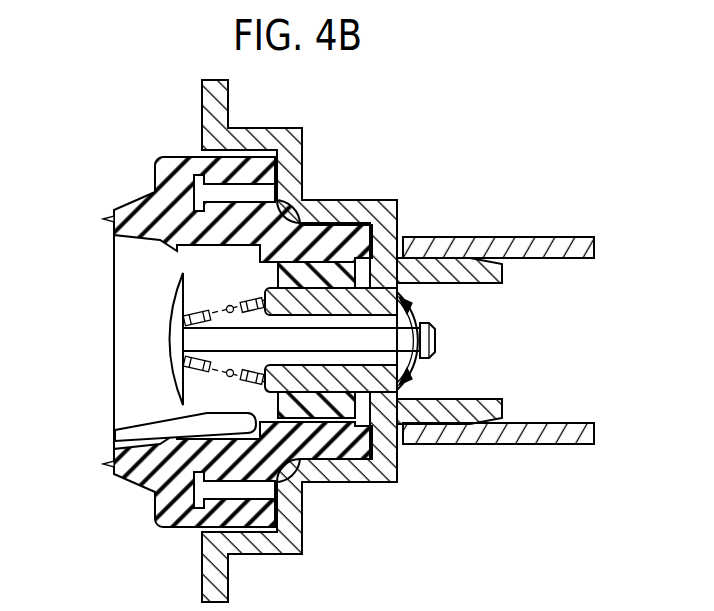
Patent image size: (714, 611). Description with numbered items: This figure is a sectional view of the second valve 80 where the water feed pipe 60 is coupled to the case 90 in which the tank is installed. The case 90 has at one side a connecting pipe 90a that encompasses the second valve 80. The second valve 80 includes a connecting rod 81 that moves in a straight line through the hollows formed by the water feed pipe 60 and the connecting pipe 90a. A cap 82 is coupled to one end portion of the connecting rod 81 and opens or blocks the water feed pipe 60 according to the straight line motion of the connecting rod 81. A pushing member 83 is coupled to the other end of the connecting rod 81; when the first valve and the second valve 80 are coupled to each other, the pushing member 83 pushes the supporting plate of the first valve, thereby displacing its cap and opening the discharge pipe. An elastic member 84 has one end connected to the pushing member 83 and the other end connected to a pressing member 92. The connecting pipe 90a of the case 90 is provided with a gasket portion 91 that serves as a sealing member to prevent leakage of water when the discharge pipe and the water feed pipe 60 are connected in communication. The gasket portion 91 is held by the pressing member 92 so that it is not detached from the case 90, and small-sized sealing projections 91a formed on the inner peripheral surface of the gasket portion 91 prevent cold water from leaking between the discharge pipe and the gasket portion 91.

The water feed pipe 60 is at (574, 432).
The second valve 80 is at (158, 378).
The connecting rod 81 is at (196, 343).
The cap 82 is at (424, 323).
The pushing member 83 is at (172, 322).
The elastic member 84 is at (198, 363).
The case 90 is at (213, 128).
The connecting pipe 90a is at (372, 317).
The gasket portion 91 is at (125, 208).
The sealing projections 91a is at (152, 428).
The pressing member 92 is at (268, 284).